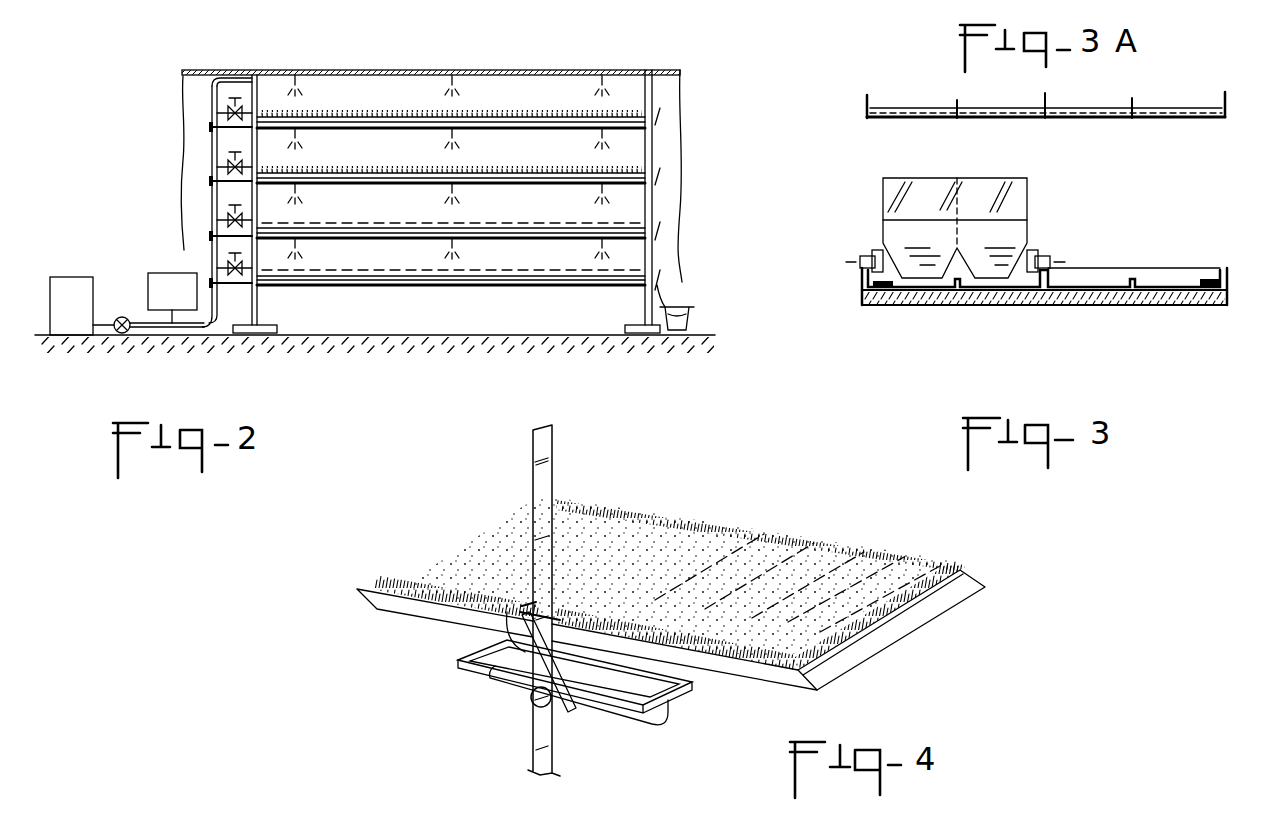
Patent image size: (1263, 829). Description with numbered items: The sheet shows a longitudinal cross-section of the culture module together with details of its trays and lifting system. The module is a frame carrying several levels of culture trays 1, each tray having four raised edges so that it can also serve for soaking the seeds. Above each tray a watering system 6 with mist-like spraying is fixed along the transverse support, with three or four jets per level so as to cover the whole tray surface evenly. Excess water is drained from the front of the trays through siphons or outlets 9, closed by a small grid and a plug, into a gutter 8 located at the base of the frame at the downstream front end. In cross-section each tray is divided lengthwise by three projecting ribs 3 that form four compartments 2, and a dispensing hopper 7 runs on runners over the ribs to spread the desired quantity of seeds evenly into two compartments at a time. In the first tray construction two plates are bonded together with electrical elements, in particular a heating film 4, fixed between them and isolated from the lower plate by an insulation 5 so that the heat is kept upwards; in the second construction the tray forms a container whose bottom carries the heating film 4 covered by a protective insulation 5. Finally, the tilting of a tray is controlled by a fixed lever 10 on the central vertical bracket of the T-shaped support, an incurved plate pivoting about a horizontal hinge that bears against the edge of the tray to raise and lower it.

In FIG. 4, the tray 1 is at (430, 628).
In FIG. 3A, the compartment 2 is at (1115, 108).
In FIG. 3, the projecting rib 3 is at (1128, 277).
In FIG. 3A, the heating film 4 is at (898, 116).
In FIG. 3, the heating film 4 is at (1018, 302).
In FIG. 3A, the insulation 5 is at (885, 108).
In FIG. 3, the insulation 5 is at (1068, 306).
In FIG. 2, the watering system 6 is at (210, 150).
In FIG. 3, the dispensing hopper 7 is at (1032, 207).
In FIG. 2, the gutter 8 is at (673, 331).
In FIG. 3, the siphon or outlet 9 is at (1210, 278).
In FIG. 2, the lever 10 is at (658, 126).
In FIG. 4, the lever 10 is at (493, 702).